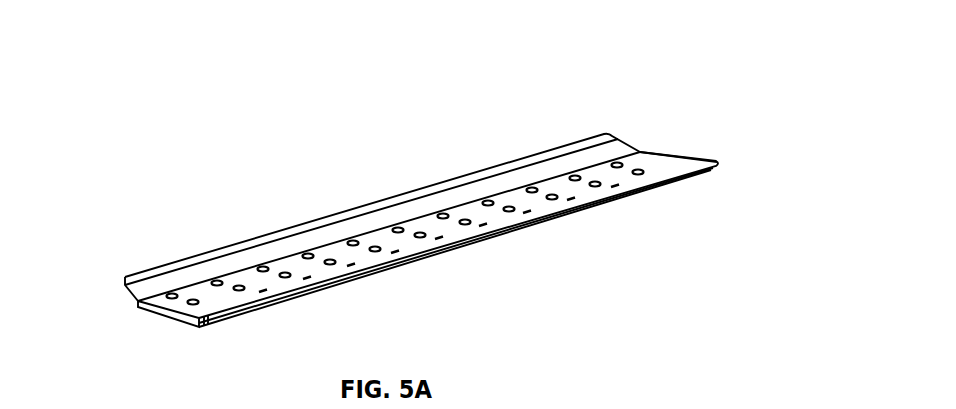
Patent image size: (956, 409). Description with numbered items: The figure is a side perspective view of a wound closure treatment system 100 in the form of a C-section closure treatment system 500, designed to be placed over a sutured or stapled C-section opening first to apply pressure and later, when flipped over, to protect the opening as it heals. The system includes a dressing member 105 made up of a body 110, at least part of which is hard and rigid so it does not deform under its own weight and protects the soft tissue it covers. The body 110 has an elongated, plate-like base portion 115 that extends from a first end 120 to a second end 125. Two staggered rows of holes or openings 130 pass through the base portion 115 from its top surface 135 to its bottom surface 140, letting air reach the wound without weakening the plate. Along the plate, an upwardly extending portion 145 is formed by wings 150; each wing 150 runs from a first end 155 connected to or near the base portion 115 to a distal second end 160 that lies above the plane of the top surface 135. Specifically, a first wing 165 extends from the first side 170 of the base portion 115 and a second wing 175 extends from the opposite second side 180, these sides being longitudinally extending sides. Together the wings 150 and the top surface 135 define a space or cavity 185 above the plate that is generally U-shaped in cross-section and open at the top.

The wound closure treatment system 100 is at (641, 63).
The dressing member 105 is at (685, 80).
The body 110 is at (678, 106).
The base portion 115 is at (207, 295).
The first end 120 is at (137, 248).
The second end 125 is at (621, 75).
The holes or openings 130 is at (308, 257).
The top surface 135 is at (435, 236).
The bottom surface 140 is at (200, 325).
The upwardly extending portion 145 is at (123, 290).
The wings 150 is at (253, 252).
The first end of wing 155 is at (588, 118).
The second end of wing 160 is at (470, 172).
The first wing 165 is at (611, 136).
The first side 170 is at (645, 136).
The second wing 175 is at (687, 178).
The second side 180 is at (787, 138).
The space or cavity 185 is at (682, 153).
The C-section closure treatment system 500 is at (140, 177).